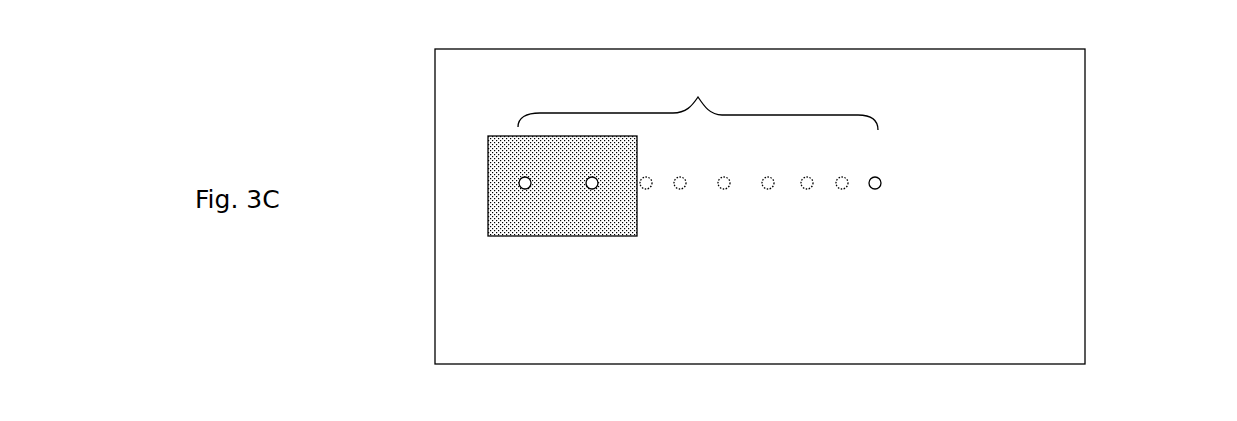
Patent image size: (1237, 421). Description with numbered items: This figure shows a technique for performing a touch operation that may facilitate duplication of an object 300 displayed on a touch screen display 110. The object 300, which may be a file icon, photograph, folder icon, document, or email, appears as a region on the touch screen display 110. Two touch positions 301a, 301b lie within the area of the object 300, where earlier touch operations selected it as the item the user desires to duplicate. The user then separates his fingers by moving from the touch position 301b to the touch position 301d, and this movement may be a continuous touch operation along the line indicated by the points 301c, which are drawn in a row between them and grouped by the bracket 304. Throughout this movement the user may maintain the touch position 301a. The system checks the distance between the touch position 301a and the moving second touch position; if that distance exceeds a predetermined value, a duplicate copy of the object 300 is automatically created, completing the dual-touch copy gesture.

The touch screen display 110 is at (1086, 213).
The object 300 is at (565, 237).
The row of sensor elements 304 is at (702, 96).
The touch position 301a is at (519, 184).
The touch position 301b is at (591, 177).
The points 301c is at (733, 203).
The touch position 301d is at (875, 190).